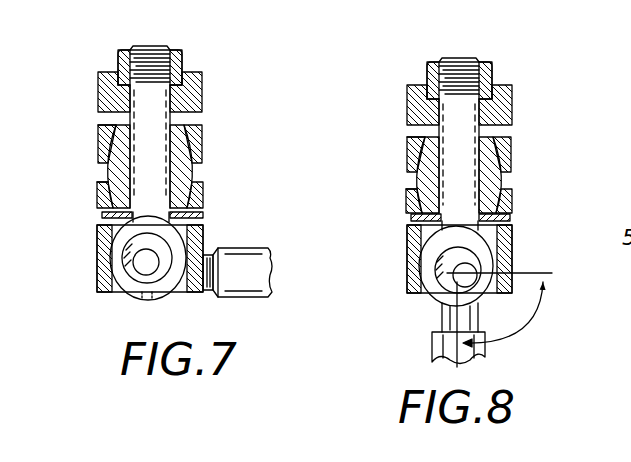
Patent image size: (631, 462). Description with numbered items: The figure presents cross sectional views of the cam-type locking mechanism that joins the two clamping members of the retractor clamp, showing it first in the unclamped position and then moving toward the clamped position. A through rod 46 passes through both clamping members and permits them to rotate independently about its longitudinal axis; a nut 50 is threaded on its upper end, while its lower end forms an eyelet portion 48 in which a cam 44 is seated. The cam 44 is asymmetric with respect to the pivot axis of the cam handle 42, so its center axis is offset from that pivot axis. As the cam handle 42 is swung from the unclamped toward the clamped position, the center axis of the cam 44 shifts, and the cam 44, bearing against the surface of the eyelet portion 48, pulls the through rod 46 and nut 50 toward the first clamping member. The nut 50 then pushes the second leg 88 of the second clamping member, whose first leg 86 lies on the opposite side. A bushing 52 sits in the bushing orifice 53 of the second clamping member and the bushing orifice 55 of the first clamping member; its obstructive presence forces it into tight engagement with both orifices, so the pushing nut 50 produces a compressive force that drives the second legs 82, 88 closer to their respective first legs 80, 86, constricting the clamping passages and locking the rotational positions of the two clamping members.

In FIG. 7, the cam handle 42 is at (237, 297).
In FIG. 8, the cam handle 42 is at (427, 343).
In FIG. 7, the cam 44 is at (147, 267).
In FIG. 8, the cam 44 is at (470, 262).
In FIG. 7, the through rod 46 is at (147, 173).
In FIG. 8, the through rod 46 is at (453, 180).
In FIG. 7, the eyelet portion 48 is at (112, 257).
In FIG. 8, the eyelet portion 48 is at (430, 300).
In FIG. 7, the nut 50 is at (190, 52).
In FIG. 8, the nut 50 is at (498, 70).
In FIG. 7, the bushing 52 is at (185, 173).
In FIG. 8, the bushing 52 is at (497, 175).
In FIG. 7, the bushing orifice 53 is at (105, 130).
In FIG. 8, the bushing orifice 53 is at (418, 137).
In FIG. 7, the bushing orifice 55 is at (97, 193).
In FIG. 8, the bushing orifice 55 is at (418, 192).
In FIG. 7, the first leg 80 is at (207, 230).
In FIG. 8, the first leg 80 is at (515, 255).
In FIG. 7, the second leg 82 is at (207, 195).
In FIG. 8, the second leg 82 is at (512, 200).
In FIG. 7, the first leg 86 is at (97, 147).
In FIG. 8, the first leg 86 is at (407, 158).
In FIG. 7, the second leg 88 is at (205, 82).
In FIG. 8, the second leg 88 is at (515, 102).